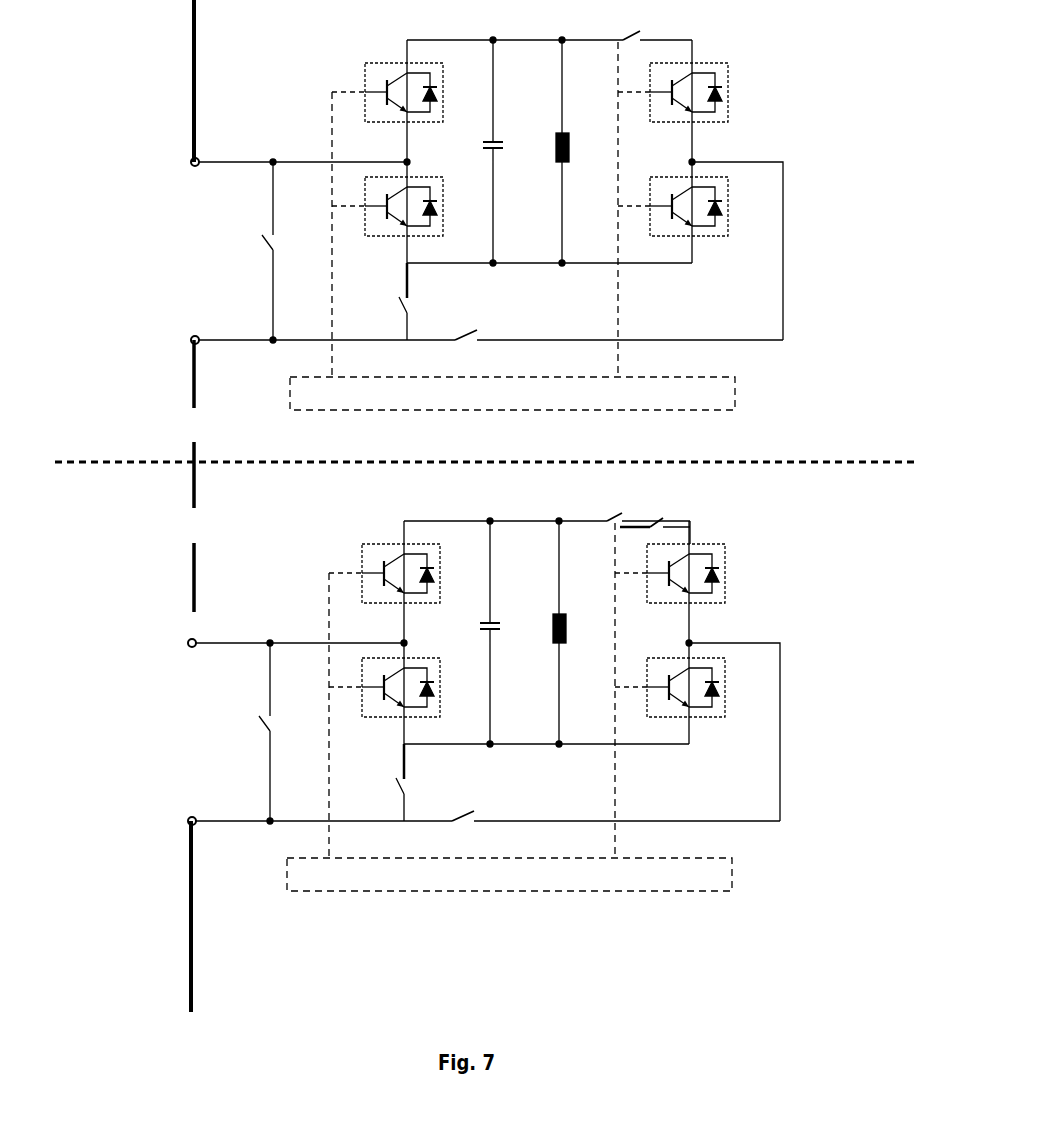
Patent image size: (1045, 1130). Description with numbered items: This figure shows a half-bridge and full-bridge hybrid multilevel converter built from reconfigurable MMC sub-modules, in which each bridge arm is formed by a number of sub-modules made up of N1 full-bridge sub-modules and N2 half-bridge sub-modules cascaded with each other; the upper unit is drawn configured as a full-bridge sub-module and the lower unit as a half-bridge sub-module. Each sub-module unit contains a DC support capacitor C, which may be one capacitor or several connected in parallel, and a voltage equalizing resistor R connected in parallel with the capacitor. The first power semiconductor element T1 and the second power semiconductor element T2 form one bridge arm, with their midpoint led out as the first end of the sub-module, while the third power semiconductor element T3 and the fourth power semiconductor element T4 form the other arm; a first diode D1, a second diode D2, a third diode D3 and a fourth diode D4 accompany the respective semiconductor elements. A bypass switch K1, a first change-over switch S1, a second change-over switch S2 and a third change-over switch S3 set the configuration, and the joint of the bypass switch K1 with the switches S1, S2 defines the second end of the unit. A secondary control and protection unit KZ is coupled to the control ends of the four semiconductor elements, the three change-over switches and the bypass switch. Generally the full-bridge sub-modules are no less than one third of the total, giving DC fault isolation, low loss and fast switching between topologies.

The first power semiconductor element T1 is at (391, 333).
The second power semiconductor element T2 is at (391, 447).
The third power semiconductor element T3 is at (675, 333).
The fourth power semiconductor element T4 is at (675, 447).
The first diode D1 is at (435, 333).
The second diode D2 is at (435, 447).
The third diode D3 is at (721, 333).
The fourth diode D4 is at (721, 447).
The DC support capacitor C is at (488, 388).
The voltage equalizing resistor R is at (554, 388).
The bypass switch K1 is at (329, 726).
The first change-over switch S1 is at (395, 788).
The second change-over switch S2 is at (464, 858).
The third change-over switch S3 is at (635, 269).
The secondary control and protection unit KZ is at (511, 634).
The full-bridge sub-modules N1 is at (554, 222).
The half-bridge sub-modules N2 is at (554, 727).